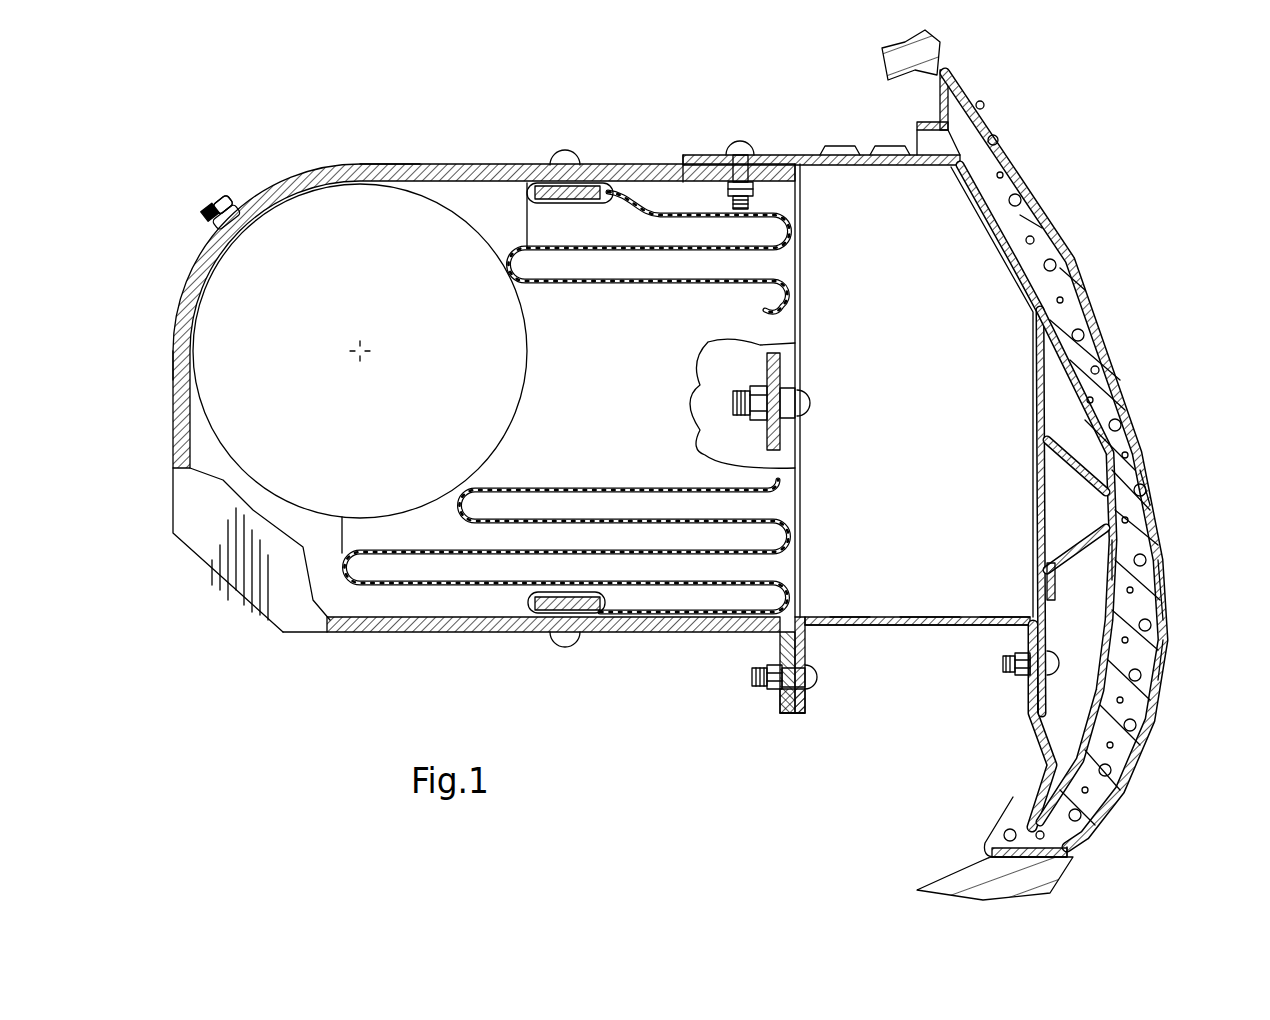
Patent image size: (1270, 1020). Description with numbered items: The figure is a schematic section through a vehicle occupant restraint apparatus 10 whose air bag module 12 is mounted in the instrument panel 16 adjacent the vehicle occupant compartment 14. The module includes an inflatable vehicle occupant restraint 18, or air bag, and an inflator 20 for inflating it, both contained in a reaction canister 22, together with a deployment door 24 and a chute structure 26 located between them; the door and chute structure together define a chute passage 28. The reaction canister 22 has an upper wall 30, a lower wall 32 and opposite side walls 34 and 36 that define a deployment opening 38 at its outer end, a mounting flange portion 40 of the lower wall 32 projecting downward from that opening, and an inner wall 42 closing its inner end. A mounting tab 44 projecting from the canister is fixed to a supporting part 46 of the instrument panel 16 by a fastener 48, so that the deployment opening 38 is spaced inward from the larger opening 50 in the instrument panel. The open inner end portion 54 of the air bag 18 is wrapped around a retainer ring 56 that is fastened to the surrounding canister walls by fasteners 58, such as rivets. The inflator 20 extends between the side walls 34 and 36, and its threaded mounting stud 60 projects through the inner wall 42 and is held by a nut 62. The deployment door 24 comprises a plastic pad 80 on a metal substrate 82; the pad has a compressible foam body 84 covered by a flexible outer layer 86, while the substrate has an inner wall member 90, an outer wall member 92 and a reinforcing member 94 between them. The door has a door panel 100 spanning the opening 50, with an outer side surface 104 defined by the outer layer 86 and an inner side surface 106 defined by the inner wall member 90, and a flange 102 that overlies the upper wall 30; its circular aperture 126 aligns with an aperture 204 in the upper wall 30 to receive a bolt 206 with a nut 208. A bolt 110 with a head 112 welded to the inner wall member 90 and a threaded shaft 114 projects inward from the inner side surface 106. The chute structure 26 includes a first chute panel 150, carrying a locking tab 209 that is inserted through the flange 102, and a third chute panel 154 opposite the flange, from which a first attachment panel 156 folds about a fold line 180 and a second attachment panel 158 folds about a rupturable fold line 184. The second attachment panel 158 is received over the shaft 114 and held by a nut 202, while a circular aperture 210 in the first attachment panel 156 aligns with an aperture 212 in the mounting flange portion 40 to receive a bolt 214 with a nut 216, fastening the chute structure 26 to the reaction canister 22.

The vehicle occupant restraint apparatus 10 is at (1078, 135).
The air bag module 12 is at (390, 140).
The vehicle occupant compartment 14 is at (1172, 247).
The instrument panel 16 is at (938, 40).
The inflatable vehicle occupant restraint 18 is at (500, 240).
The inflator 20 is at (335, 205).
The reaction canister 22 is at (190, 272).
The deployment door 24 is at (1070, 192).
The chute structure 26 is at (915, 626).
The chute passage 28 is at (918, 378).
The upper wall 30 is at (495, 170).
The lower wall 32 is at (440, 634).
The side wall 34 is at (190, 458).
The side wall 36 is at (210, 523).
The deployment opening 38 is at (802, 257).
The mounting flange portion 40 is at (793, 715).
The inner wall 42 is at (178, 345).
The mounting tab 44 is at (792, 378).
The supporting part 46 is at (768, 363).
The fastener 48 is at (808, 403).
The opening 50 is at (962, 74).
The open inner end portion 54 is at (535, 612).
The retainer ring 56 is at (553, 612).
The fastener 58 is at (563, 160).
The threaded mounting stud 60 is at (212, 200).
The nut 62 is at (236, 200).
The plastic pad 80 is at (1071, 304).
The metal substrate 82 is at (1068, 445).
The compressible foam body 84 is at (1120, 420).
The flexible outer layer 86 is at (1135, 455).
The inner wall member 90 is at (1048, 472).
The outer wall member 92 is at (1160, 495).
The reinforcing member 94 is at (1150, 545).
The door panel 100 is at (1166, 577).
The flange 102 is at (791, 152).
The outer side surface 104 is at (1168, 618).
The inner side surface 106 is at (1048, 520).
The bolt 110 is at (1115, 690).
The head 112 is at (1058, 673).
The threaded shaft 114 is at (1003, 668).
The circular aperture 126 is at (702, 180).
The first chute panel 150 is at (840, 627).
The third chute panel 154 is at (893, 616).
The first attachment panel 156 is at (803, 715).
The second attachment panel 158 is at (1030, 712).
The fold line 180 is at (858, 615).
The fold line 184 is at (1030, 616).
The nut 202 is at (1012, 660).
The aperture 204 is at (722, 170).
The bolt 206 is at (740, 152).
The nut 208 is at (753, 190).
The locking tab 209 is at (880, 148).
The circular aperture 210 is at (802, 690).
The aperture 212 is at (782, 698).
The bolt 214 is at (818, 678).
The nut 216 is at (770, 668).